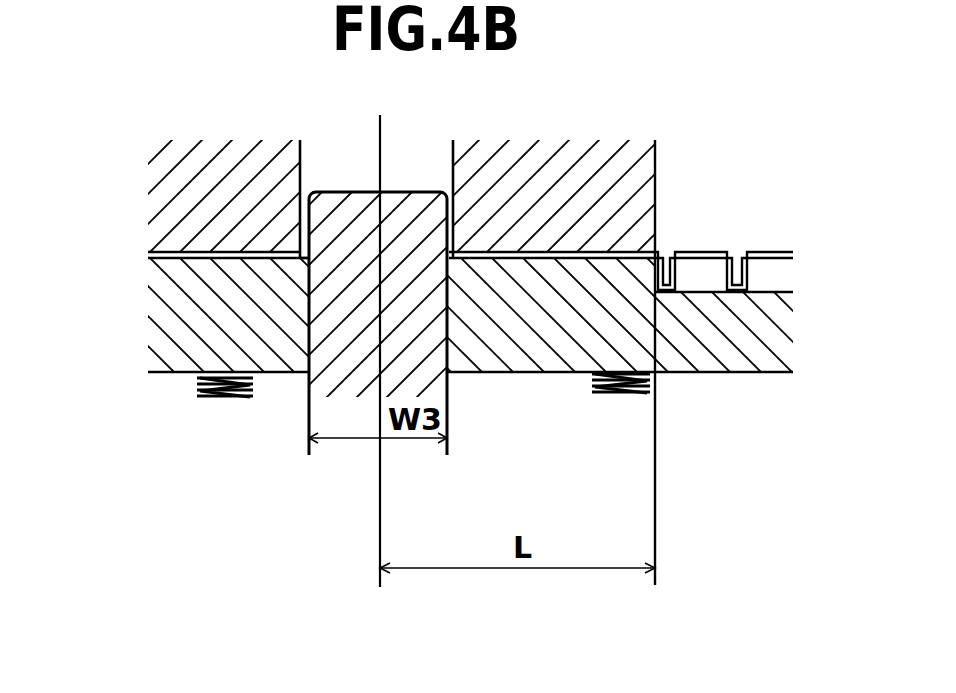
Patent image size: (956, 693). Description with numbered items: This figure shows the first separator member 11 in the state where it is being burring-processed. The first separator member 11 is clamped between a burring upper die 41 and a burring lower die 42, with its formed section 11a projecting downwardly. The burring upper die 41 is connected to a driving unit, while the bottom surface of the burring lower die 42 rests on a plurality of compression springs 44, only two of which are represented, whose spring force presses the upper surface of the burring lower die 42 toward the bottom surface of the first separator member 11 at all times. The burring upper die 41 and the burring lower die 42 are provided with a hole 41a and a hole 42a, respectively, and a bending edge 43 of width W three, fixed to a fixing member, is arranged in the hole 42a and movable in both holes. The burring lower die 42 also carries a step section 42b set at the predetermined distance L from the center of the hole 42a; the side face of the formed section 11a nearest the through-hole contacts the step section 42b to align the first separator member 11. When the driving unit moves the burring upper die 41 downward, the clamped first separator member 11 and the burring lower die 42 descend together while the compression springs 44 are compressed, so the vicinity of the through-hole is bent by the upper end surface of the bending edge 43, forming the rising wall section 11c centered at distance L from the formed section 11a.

The first separator member 11 is at (773, 251).
The formed section 11a is at (661, 293).
The rising wall section 11c is at (309, 238).
The burring upper die 41 is at (535, 166).
The hole for bending edge 41a is at (300, 167).
The burring lower die 42 is at (528, 363).
The hole for bending edge 42a is at (309, 274).
The step section 42b is at (667, 268).
The bending edge 43 is at (348, 383).
The compression spring 44 is at (180, 395).